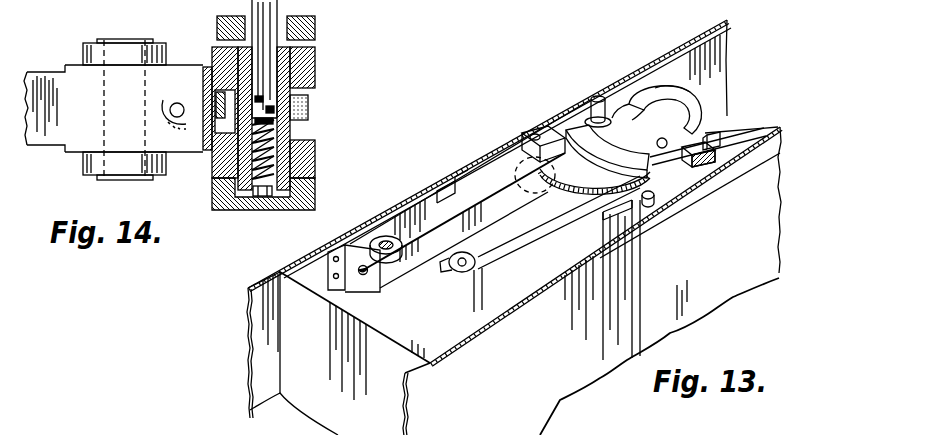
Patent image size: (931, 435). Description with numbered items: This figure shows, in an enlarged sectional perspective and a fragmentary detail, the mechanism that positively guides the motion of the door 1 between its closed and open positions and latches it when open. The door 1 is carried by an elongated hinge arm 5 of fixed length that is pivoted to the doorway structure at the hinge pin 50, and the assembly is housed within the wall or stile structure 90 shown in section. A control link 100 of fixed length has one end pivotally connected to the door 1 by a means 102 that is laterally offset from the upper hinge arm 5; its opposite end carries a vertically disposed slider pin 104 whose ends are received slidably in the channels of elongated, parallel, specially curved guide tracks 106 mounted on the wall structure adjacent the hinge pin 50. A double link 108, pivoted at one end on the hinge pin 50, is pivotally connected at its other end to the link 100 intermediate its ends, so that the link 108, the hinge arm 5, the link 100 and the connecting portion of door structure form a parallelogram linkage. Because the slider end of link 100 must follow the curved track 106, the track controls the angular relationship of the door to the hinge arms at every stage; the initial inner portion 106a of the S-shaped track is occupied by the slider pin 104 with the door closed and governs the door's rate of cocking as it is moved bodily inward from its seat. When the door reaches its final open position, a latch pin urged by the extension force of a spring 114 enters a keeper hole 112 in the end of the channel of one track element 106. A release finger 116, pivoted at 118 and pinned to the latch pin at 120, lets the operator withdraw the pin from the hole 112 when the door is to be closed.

In FIG. 13, the door 1 is at (562, 404).
In FIG. 13, the hinge arm 5 is at (430, 217).
In FIG. 13, the hinge pin 50 is at (593, 98).
In FIG. 13, the top rail flange 90 is at (658, 59).
In FIG. 14, the link 100 is at (60, 135).
In FIG. 13, the link 100 is at (520, 240).
In FIG. 13, the pivotal connecting means 102 is at (425, 288).
In FIG. 14, the slider pin 104 is at (240, 42).
In FIG. 14, the guide track 106 is at (318, 26).
In FIG. 13, the guide track 106 is at (703, 90).
In FIG. 13, the initial track portion 106a is at (697, 87).
In FIG. 14, the double link 108 is at (92, 52).
In FIG. 13, the double link 108 is at (573, 117).
In FIG. 14, the hole 112 is at (278, 14).
In FIG. 13, the hole 112 is at (527, 133).
In FIG. 14, the spring 114 is at (243, 207).
In FIG. 14, the release finger 116 is at (306, 107).
In FIG. 13, the release finger 116 is at (723, 160).
In FIG. 14, the pivot 118 is at (173, 104).
In FIG. 13, the pivot 118 is at (695, 167).
In FIG. 14, the pin connection 120 is at (290, 118).